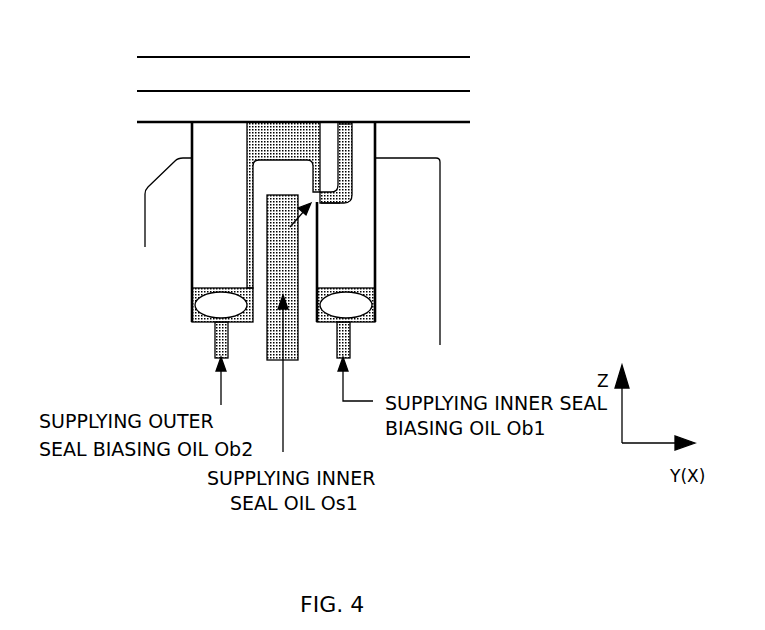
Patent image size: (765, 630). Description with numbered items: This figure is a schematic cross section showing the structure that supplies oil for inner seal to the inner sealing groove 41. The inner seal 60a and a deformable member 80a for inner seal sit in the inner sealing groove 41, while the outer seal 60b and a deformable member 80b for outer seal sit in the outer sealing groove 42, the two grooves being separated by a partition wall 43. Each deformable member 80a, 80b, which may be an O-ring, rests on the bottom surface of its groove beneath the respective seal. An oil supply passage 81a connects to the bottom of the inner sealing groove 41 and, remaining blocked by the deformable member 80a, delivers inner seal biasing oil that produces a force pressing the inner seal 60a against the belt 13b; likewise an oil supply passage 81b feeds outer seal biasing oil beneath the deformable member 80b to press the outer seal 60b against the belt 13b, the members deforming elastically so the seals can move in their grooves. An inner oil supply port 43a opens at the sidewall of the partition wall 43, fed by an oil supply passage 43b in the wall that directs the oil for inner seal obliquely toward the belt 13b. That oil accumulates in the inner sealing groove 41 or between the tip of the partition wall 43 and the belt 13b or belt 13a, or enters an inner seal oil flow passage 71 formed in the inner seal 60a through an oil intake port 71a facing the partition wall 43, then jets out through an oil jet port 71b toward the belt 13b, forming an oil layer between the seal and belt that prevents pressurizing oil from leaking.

The belt 13a is at (447, 70).
The belt 13b is at (450, 110).
The inner sealing groove 41 is at (377, 278).
The outer sealing groove 42 is at (192, 283).
The partition wall 43 is at (271, 172).
The inner oil supply port 43a is at (311, 193).
The oil supply passage 43b is at (300, 345).
The inner seal 60a is at (345, 245).
The outer seal 60b is at (217, 226).
The inner seal oil flow passage 71 is at (350, 195).
The oil intake port 71a is at (322, 205).
The oil jet port 71b is at (352, 133).
The deformable member for inner seal 80a is at (350, 305).
The deformable member for outer seal 80b is at (210, 306).
The oil supply passage 81a is at (352, 338).
The oil supply passage 81b is at (214, 346).